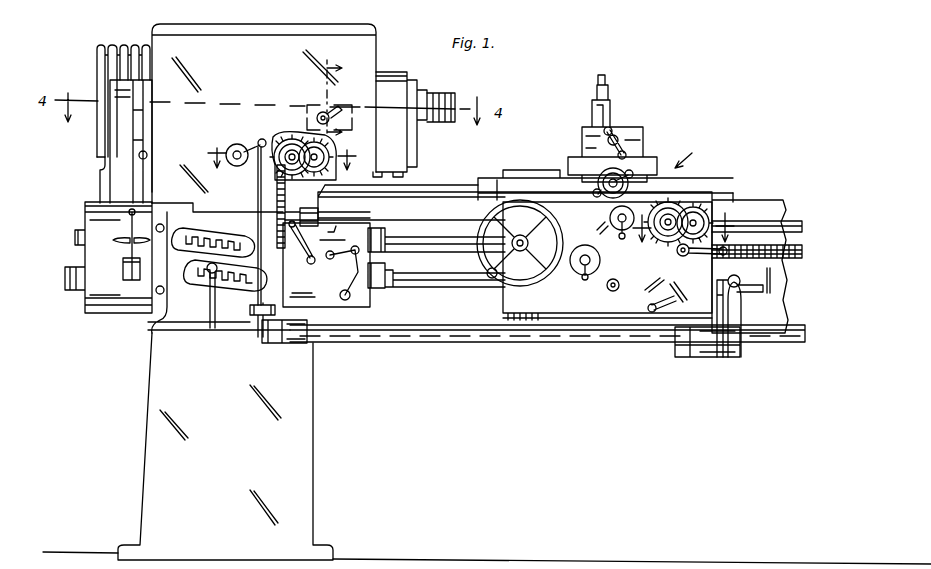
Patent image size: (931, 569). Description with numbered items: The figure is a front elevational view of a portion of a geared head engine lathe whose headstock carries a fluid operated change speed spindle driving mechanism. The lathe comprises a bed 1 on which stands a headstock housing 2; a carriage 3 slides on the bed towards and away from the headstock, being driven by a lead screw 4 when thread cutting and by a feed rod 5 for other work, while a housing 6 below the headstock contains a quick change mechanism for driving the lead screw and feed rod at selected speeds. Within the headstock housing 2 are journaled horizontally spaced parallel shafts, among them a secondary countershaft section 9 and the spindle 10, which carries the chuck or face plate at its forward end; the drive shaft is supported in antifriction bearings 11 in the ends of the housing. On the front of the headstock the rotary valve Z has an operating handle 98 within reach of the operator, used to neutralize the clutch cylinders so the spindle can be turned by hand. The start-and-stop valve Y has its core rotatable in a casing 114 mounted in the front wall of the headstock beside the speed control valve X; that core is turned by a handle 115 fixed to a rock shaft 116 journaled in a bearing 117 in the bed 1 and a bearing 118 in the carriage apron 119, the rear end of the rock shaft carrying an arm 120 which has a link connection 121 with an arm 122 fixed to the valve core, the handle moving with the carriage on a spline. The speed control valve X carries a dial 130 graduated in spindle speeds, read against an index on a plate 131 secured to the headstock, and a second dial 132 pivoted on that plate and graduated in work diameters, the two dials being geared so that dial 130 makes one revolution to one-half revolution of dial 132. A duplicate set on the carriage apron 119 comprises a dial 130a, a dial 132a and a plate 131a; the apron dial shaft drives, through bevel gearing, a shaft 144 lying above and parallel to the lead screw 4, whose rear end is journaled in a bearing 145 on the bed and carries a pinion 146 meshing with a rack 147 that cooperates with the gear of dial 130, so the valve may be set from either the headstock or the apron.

The bed 1 is at (445, 192).
The headstock housing 2 is at (176, 50).
The carriage 3 is at (683, 196).
The lead screw 4 is at (792, 248).
The feed rod 5 is at (448, 287).
The housing 6 is at (160, 276).
The secondary countershaft section 9 is at (330, 101).
The spindle 10 is at (428, 95).
The antifriction bearings 11 is at (283, 157).
The operating handle 98 is at (338, 106).
The casing 114 is at (230, 150).
The handle 115 is at (742, 320).
The rock shaft 116 is at (555, 344).
The bearing 117 is at (292, 348).
The bearing 118 is at (700, 358).
The carriage apron 119 is at (622, 305).
The arm 120 is at (262, 324).
The link connection 121 is at (256, 205).
The arm 122 is at (250, 146).
The dial 130 is at (280, 162).
The dial 130a is at (672, 205).
The plate 131 is at (333, 176).
The plate 131a is at (668, 243).
The second dial 132 is at (330, 153).
The dial 132a is at (702, 212).
The shaft 144 is at (452, 210).
The bearing 145 is at (320, 208).
The pinion 146 is at (268, 186).
The rack 147 is at (300, 240).